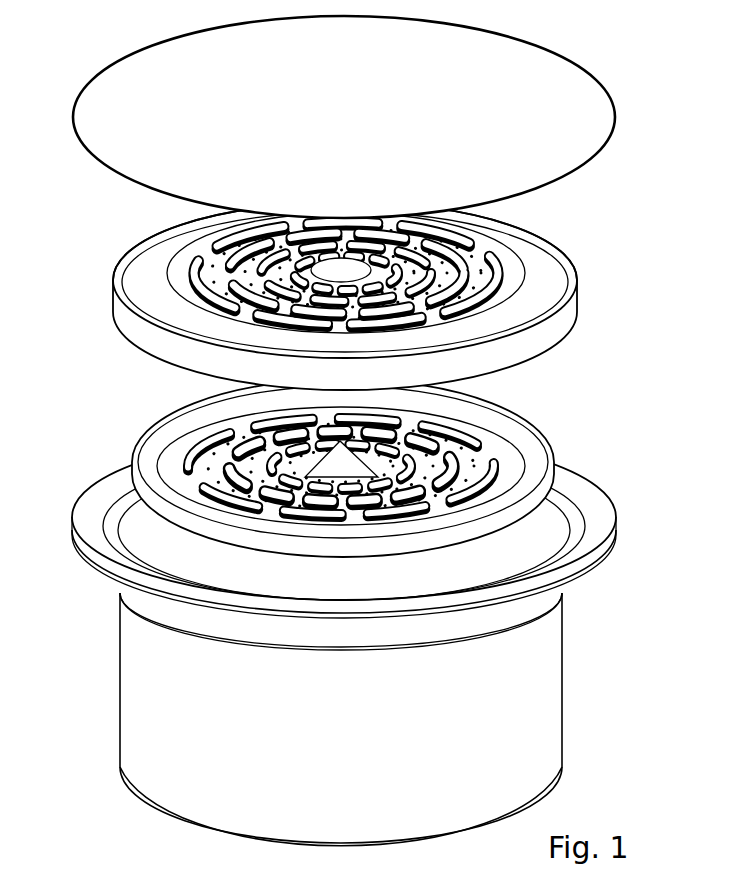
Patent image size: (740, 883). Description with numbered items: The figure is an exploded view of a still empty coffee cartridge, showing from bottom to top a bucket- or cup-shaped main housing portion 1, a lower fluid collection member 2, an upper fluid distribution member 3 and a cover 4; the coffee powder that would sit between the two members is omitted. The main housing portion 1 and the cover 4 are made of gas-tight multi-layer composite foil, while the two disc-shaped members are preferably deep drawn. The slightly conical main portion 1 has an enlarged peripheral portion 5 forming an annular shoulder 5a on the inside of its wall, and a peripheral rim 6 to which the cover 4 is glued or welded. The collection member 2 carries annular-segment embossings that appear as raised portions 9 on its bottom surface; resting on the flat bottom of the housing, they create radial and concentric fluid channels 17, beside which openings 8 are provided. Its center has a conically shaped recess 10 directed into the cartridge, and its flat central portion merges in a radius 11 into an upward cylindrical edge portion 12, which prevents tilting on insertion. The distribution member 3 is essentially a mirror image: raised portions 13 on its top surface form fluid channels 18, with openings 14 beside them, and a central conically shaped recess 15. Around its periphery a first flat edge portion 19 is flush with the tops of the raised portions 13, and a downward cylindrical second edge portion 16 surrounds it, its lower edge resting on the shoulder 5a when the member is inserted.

The main housing portion 1 is at (545, 690).
The lower fluid collection member 2 is at (565, 447).
The upper fluid distribution member 3 is at (594, 268).
The cover 4 is at (582, 96).
The peripheral portion 5 is at (397, 632).
The annular shoulder 5a is at (122, 532).
The peripheral rim 6 is at (88, 520).
The openings 8 is at (203, 468).
The raised portions 9 is at (224, 465).
The conically shaped recess 10 is at (351, 470).
The radius 11 is at (560, 497).
The cylindrical edge portion 12 is at (545, 438).
The raised portions 13 is at (466, 222).
The openings 14 is at (205, 216).
The conically shaped recess 15 is at (342, 275).
The second edge portion 16 is at (562, 320).
The fluid channels 17 is at (393, 458).
The fluid channels 18 is at (388, 218).
The first flat edge portion 19 is at (555, 254).